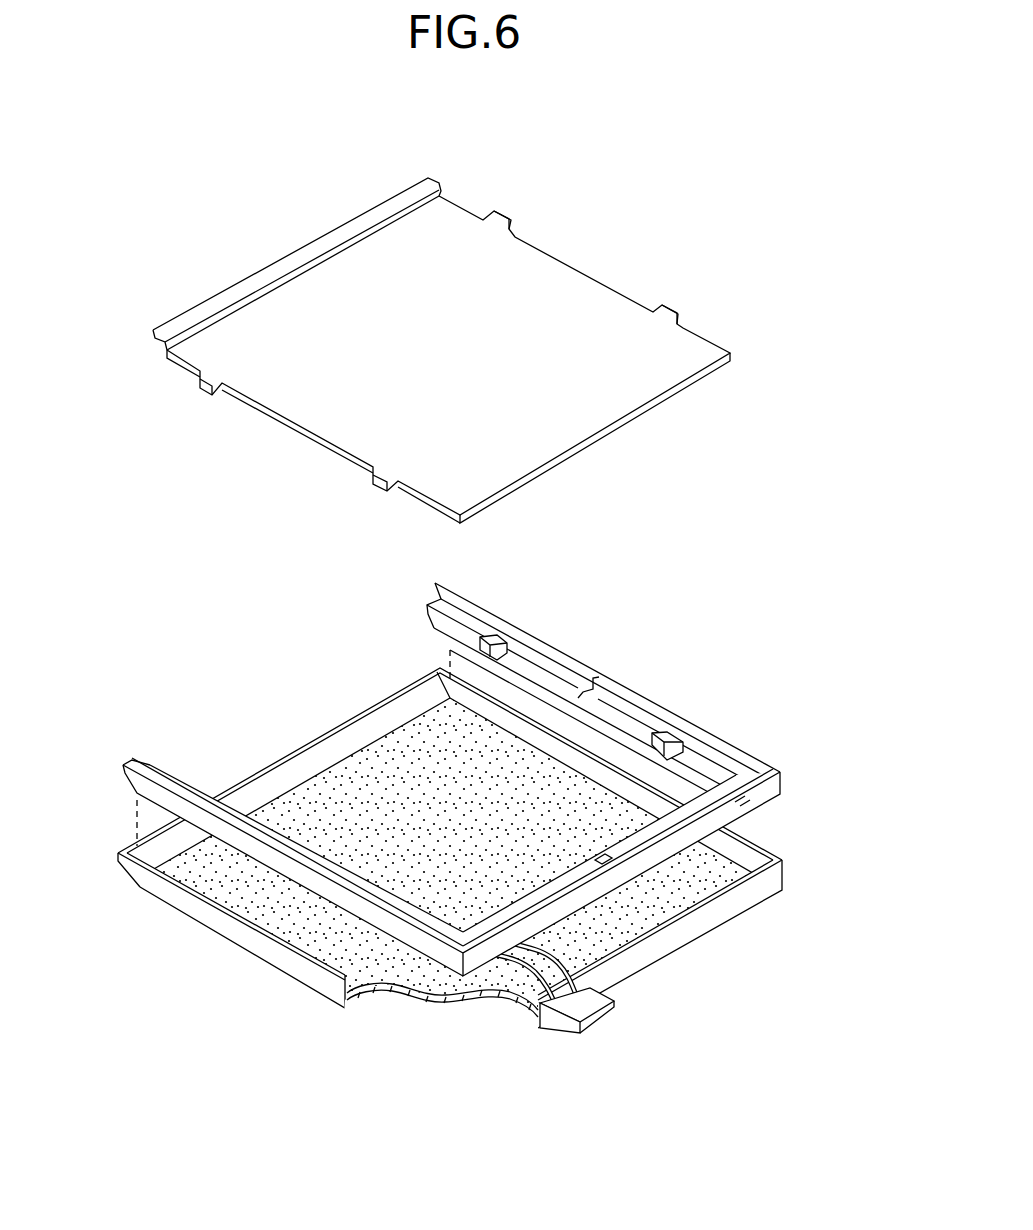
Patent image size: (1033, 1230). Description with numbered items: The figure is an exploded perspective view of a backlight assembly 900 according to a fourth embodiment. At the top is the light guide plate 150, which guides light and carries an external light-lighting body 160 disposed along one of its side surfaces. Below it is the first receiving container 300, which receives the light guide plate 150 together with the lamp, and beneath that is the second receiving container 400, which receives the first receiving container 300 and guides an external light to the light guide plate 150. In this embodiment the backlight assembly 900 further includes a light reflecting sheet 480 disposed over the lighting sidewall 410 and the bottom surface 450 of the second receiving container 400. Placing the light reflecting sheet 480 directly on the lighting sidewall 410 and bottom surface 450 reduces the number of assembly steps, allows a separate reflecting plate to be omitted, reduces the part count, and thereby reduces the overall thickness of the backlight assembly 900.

The light guide plate 150 is at (546, 222).
The external light-lighting body 160 is at (316, 205).
The backlight assembly 900 is at (695, 235).
The first receiving container 300 is at (691, 672).
The second receiving container 400 is at (801, 845).
The lighting sidewall 410 is at (136, 843).
The bottom surface 450 is at (420, 997).
The light reflecting sheet 480 is at (320, 962).